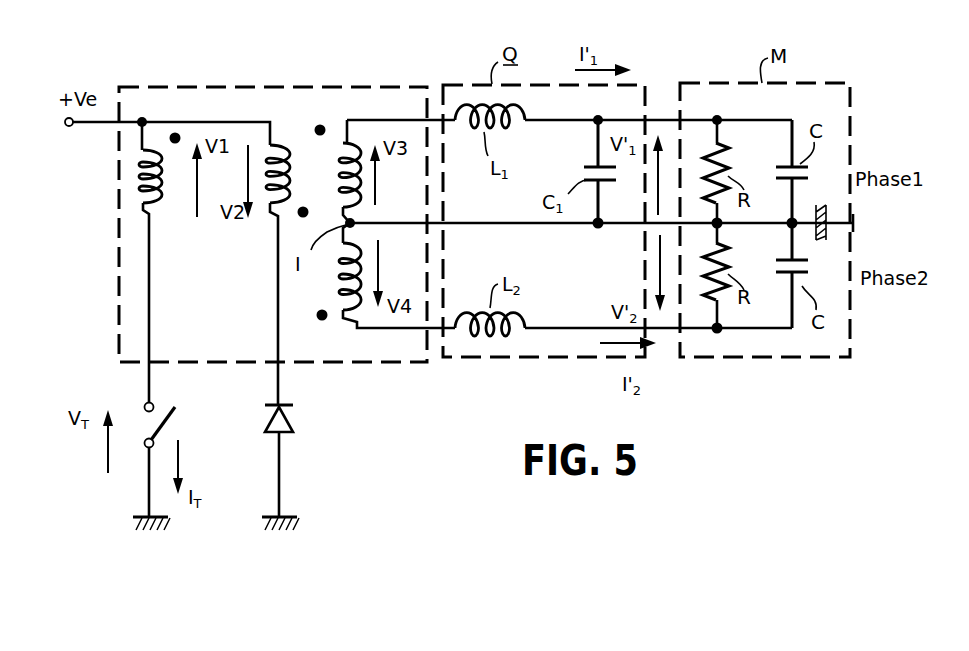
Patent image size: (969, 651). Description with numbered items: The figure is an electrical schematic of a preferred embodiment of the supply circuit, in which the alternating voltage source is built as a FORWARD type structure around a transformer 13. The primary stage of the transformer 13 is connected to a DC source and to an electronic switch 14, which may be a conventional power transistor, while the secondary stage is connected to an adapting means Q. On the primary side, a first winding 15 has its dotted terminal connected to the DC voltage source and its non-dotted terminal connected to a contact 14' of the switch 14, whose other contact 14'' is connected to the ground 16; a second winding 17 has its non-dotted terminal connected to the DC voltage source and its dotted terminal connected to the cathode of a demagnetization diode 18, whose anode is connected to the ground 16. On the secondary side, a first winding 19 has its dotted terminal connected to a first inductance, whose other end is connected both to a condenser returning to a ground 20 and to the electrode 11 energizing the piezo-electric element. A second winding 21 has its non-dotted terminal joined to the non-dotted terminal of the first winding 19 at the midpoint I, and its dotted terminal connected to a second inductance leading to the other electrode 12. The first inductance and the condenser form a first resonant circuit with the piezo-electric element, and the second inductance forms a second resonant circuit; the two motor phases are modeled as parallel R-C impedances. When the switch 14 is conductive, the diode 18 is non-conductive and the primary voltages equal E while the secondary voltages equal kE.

The transformer 13 is at (156, 88).
The first winding 15 is at (140, 185).
The second winding 17 is at (266, 222).
The first winding 19 is at (344, 122).
The second winding 21 is at (359, 316).
The electronic switch 14 is at (185, 410).
The contact 14' is at (124, 393).
The contact 14'' is at (124, 478).
The demagnetization diode 18 is at (292, 418).
The ground 16 is at (264, 525).
The electrode 11 is at (657, 118).
The electrode 12 is at (670, 330).
The ground 20 is at (856, 226).